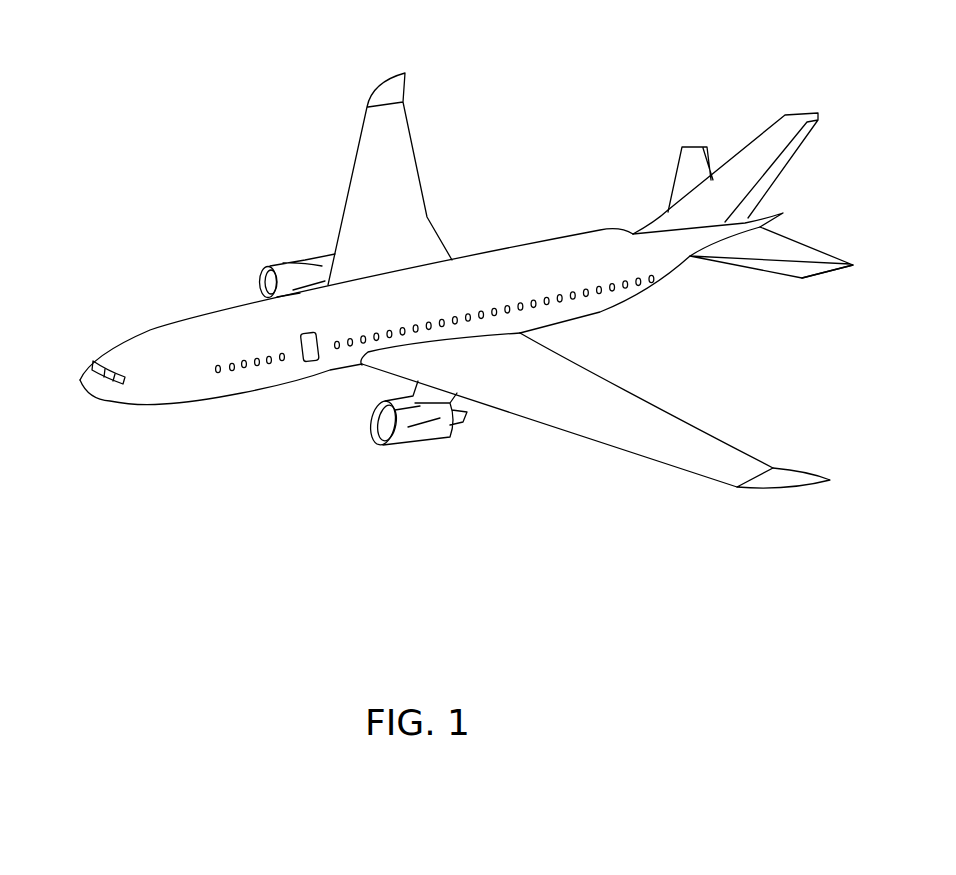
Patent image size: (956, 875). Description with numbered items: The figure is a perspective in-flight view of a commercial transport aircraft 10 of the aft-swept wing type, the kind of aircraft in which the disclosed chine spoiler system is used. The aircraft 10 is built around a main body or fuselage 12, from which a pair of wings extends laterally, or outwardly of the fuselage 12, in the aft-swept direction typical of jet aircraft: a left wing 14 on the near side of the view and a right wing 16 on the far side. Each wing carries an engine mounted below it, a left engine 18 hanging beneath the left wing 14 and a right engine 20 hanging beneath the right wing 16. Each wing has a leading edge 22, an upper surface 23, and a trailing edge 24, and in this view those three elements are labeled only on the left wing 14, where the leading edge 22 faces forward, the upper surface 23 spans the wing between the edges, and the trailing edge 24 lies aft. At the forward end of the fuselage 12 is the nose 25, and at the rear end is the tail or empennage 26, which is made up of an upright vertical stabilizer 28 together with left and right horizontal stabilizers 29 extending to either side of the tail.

The commercial transport aircraft 10 is at (157, 86).
The fuselage 12 is at (181, 391).
The left wing 14 is at (688, 488).
The right wing 16 is at (447, 171).
The left engine 18 is at (400, 431).
The right engine 20 is at (283, 264).
The leading edge 22 is at (553, 427).
The upper surface 23 is at (612, 428).
The trailing edge 24 is at (672, 416).
The nose 25 is at (85, 385).
The tail or empennage 26 is at (688, 265).
The vertical stabilizer 28 is at (768, 148).
The horizontal stabilizers 29 is at (680, 182).